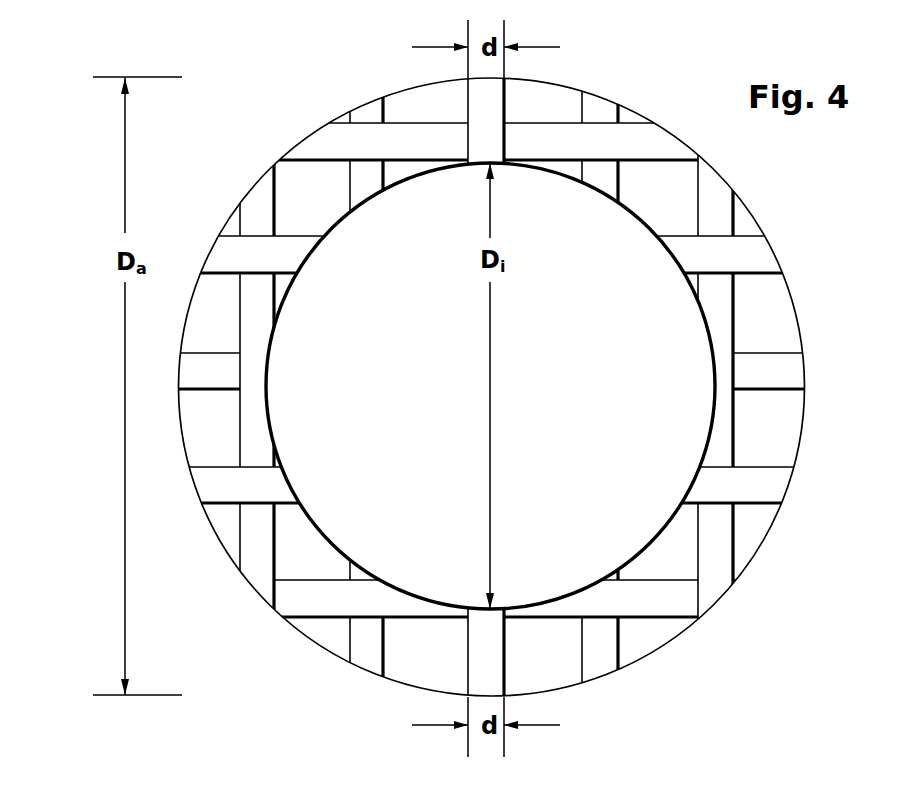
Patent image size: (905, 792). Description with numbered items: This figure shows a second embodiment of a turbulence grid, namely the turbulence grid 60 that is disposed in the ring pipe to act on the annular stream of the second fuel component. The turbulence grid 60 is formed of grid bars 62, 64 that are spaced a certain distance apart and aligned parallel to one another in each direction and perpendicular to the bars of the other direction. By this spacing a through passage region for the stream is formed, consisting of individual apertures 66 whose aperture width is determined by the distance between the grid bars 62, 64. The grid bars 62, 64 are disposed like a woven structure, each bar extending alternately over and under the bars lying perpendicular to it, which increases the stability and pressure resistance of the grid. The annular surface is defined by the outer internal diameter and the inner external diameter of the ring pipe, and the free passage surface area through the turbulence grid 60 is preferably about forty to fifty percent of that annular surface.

The turbulence grid 60 is at (303, 123).
The grid bar 62 is at (335, 602).
The grid bar 64 is at (253, 567).
The aperture 66 is at (653, 568).